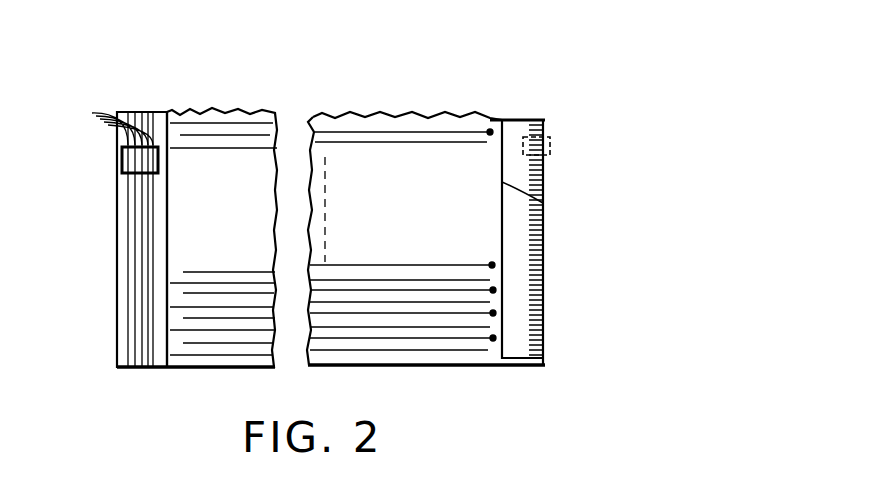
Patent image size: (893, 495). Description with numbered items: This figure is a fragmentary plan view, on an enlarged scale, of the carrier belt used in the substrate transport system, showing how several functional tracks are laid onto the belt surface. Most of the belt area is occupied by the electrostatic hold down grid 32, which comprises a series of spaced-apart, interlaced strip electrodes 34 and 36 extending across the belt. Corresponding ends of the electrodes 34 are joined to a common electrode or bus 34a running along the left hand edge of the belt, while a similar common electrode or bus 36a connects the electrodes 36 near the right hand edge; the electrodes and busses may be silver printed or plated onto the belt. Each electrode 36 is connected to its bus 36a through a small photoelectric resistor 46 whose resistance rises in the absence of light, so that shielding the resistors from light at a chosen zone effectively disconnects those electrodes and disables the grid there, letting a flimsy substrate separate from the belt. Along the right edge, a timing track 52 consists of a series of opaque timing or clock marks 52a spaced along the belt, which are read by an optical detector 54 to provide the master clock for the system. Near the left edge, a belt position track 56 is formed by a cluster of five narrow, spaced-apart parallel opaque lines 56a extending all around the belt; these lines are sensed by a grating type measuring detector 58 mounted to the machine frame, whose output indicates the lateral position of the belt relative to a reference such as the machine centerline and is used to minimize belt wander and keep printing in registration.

The hold down grid 32 is at (383, 370).
The strip electrodes 34 is at (347, 142).
The common electrode or bus 34a is at (237, 229).
The strip electrodes 36 is at (393, 130).
The common electrode or bus 36a is at (543, 204).
The photoelectric resistor 46 is at (490, 130).
The timing track 52 is at (508, 233).
The timing or clock marks 52a is at (530, 255).
The optical detector 54 is at (550, 146).
The belt position track 56 is at (106, 229).
The opaque lines 56a is at (77, 122).
The measuring detector 58 is at (122, 162).